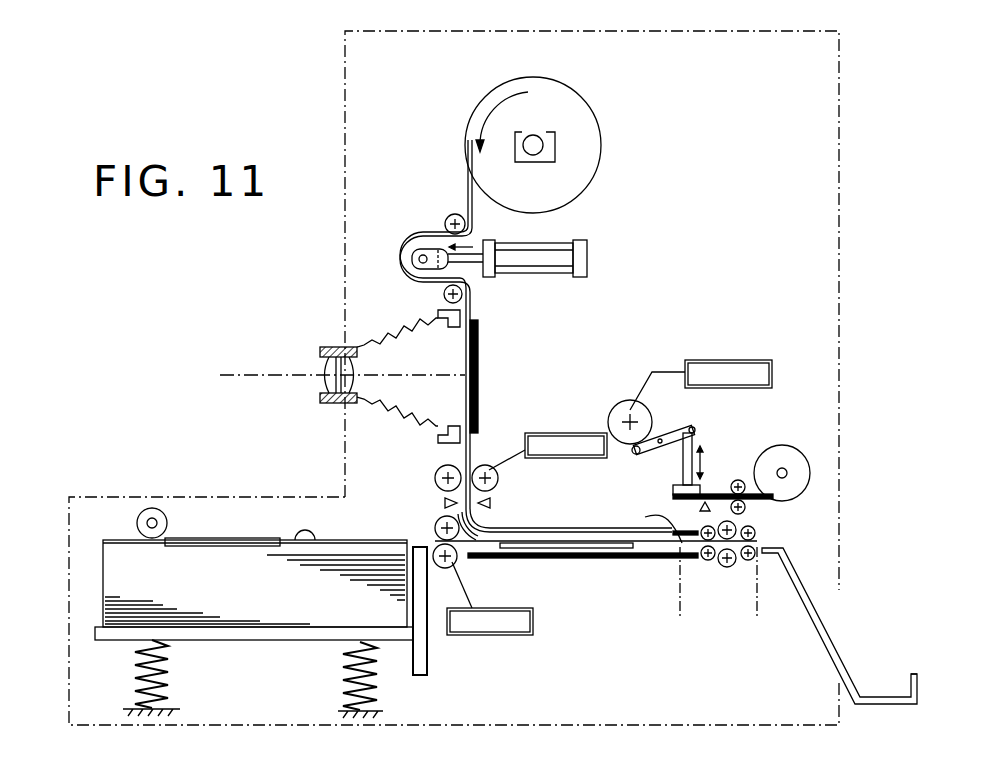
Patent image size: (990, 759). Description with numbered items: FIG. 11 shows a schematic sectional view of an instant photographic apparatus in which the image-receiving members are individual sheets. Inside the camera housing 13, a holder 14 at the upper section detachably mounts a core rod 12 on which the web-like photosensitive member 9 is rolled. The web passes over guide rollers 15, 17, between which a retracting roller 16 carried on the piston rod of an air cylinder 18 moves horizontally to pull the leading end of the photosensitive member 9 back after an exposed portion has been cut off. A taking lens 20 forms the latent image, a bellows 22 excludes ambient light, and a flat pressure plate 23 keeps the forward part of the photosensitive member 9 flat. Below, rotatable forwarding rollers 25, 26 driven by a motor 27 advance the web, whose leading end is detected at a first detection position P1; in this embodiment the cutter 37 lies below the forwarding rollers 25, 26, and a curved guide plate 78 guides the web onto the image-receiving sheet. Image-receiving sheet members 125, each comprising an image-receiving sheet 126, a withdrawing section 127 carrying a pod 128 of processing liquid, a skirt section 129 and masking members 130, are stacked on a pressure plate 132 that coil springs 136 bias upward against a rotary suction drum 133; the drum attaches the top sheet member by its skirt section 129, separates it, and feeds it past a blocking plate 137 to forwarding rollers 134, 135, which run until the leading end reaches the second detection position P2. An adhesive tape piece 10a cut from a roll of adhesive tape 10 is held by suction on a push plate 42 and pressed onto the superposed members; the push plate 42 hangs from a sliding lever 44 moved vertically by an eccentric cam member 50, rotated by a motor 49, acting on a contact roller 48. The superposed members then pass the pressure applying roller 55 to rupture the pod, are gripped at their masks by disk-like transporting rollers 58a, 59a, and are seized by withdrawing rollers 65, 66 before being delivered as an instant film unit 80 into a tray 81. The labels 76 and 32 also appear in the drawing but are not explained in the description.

The web-like photosensitive member 9 is at (577, 117).
The core rod 12 is at (540, 132).
The holder 14 is at (556, 150).
The guide roller 15 is at (452, 214).
The retracting roller 16 is at (418, 247).
The guide roller 17 is at (444, 295).
The air cylinder 18 is at (560, 242).
The camera housing 13 is at (840, 145).
The taking lens 20 is at (325, 370).
The bellows 22 is at (395, 340).
The flat plate 23 is at (480, 337).
The rotatable roller 25 is at (487, 465).
The rotatable roller 26 is at (436, 472).
The motor 27 is at (560, 433).
The cutter 37 is at (490, 503).
The curved guide plate 78 is at (482, 527).
The motor 49 is at (723, 360).
The eccentric cam member 50 is at (630, 400).
The contact roller 48 is at (633, 452).
The sliding rod 44 is at (697, 433).
The push plate 42 is at (673, 494).
The adhesive tape 10 is at (786, 446).
The adhesive tape piece 10a is at (660, 520).
The disk-like transporting roller 58a is at (735, 525).
The withdrawing roller 65 is at (757, 533).
The pressure applying roller 55 is at (707, 562).
The disk-like transporting roller 59a is at (727, 568).
The withdrawing roller 66 is at (748, 562).
The first detection position P1 is at (679, 597).
The second detection position P2 is at (763, 597).
The instant film unit 80 is at (827, 627).
The tray 81 is at (922, 684).
The guide plate 76 is at (533, 560).
The image-receiving sheet 126 is at (217, 548).
The image-receiving sheet member 125 is at (228, 530).
The pod 128 is at (305, 530).
The withdrawing section 127 is at (360, 540).
The skirt section 129 is at (122, 538).
The masking members 130 is at (188, 538).
The rotary suction drum 133 is at (152, 508).
The pressure plate 132 is at (262, 640).
The coil springs 136 is at (373, 683).
The blocking plate 137 is at (428, 660).
The forwarding roller 134 is at (437, 522).
The forwarding roller 135 is at (455, 560).
The motor 32 is at (505, 636).